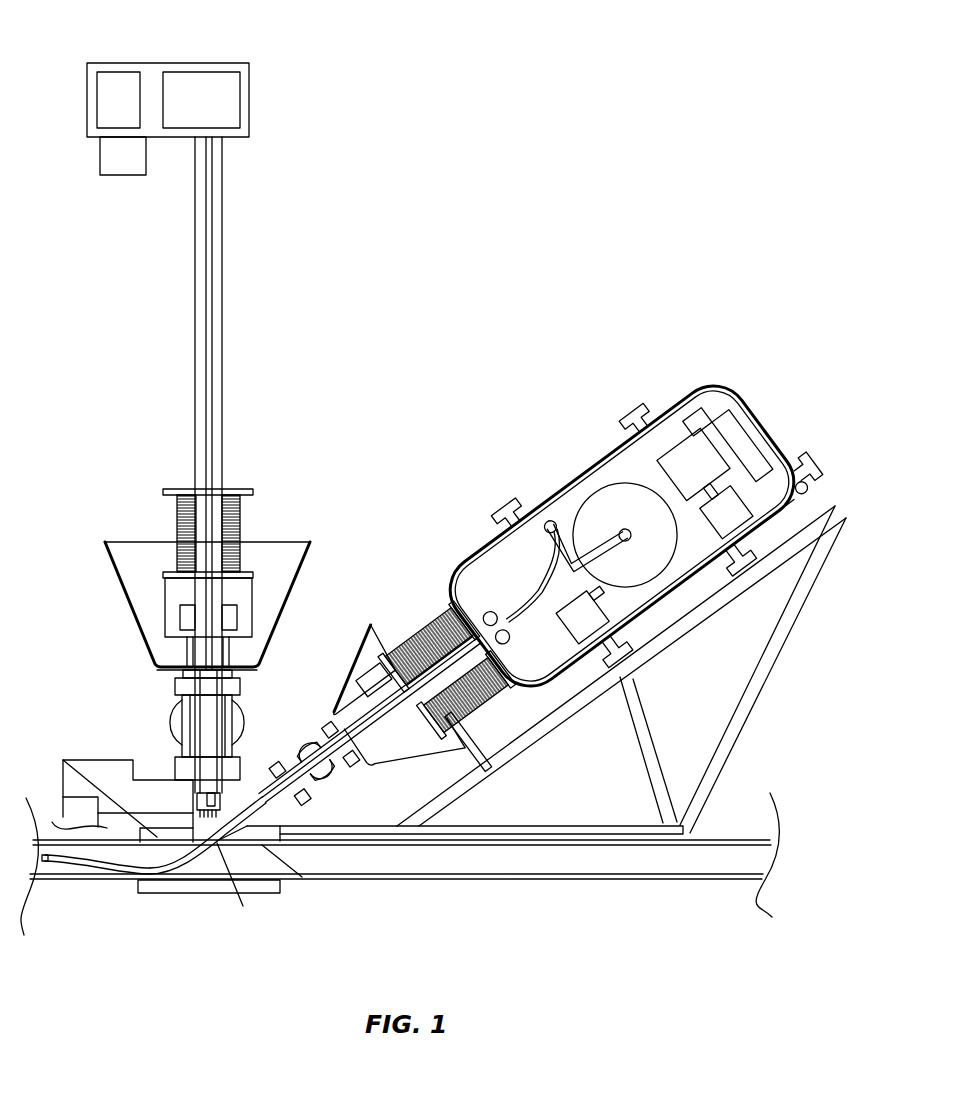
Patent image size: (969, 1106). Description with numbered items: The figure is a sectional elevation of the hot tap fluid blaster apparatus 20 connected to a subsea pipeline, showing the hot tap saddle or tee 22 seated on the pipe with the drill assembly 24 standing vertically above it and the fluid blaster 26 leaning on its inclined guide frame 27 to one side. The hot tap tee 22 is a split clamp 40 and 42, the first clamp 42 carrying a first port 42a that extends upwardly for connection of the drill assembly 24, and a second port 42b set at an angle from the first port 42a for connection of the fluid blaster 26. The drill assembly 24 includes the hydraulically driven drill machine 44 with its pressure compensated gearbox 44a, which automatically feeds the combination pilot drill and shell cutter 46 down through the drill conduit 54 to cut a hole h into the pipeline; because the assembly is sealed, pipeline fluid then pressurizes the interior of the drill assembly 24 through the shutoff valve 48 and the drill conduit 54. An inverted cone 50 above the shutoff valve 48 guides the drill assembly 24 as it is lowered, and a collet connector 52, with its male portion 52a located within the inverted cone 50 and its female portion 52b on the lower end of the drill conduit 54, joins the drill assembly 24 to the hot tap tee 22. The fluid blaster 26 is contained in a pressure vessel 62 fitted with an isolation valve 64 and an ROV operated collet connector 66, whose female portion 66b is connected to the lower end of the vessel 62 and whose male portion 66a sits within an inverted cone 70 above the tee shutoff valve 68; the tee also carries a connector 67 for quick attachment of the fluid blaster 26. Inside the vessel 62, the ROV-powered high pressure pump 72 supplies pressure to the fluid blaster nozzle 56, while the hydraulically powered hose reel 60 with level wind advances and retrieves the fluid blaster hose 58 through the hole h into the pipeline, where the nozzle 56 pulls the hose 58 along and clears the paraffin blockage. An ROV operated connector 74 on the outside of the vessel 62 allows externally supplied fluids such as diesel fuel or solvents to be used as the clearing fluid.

The hot tap fluid blaster apparatus 20 is at (562, 105).
The hot tap saddle or tee 22 is at (152, 899).
The drill assembly 24 is at (262, 81).
The fluid blaster assembly 26 is at (754, 384).
The guide frame 27 is at (623, 669).
The split clamp 40 is at (400, 869).
The first clamp 42 is at (99, 791).
The first port 42a is at (115, 778).
The second port 42b is at (321, 877).
The drill machine 44 is at (213, 113).
The pressure compensated gearbox 44a is at (89, 81).
The pilot drill and shell cutter 46 is at (171, 769).
The shutoff valve 48 is at (175, 725).
The inverted cone 50 is at (183, 606).
The collet connector 52 is at (160, 517).
The male portion 52a is at (150, 596).
The female portion 52b is at (271, 533).
The drill conduit 54 is at (176, 465).
The fluid blaster nozzle 56 is at (46, 861).
The fluid blaster hose 58 is at (208, 860).
The hose reel 60 is at (640, 524).
The pressure vessel 62 is at (814, 550).
The isolation valve 64 is at (461, 738).
The ROV operated collet connector 66 is at (409, 622).
The male portion 66a is at (342, 672).
The female portion 66b is at (523, 697).
The connector 67 is at (370, 718).
The shutoff valve 68 is at (328, 774).
The inverted cone 70 is at (483, 763).
The high pressure pump 72 is at (710, 481).
The ROV operated connector 74 is at (830, 474).
The hole h is at (243, 906).